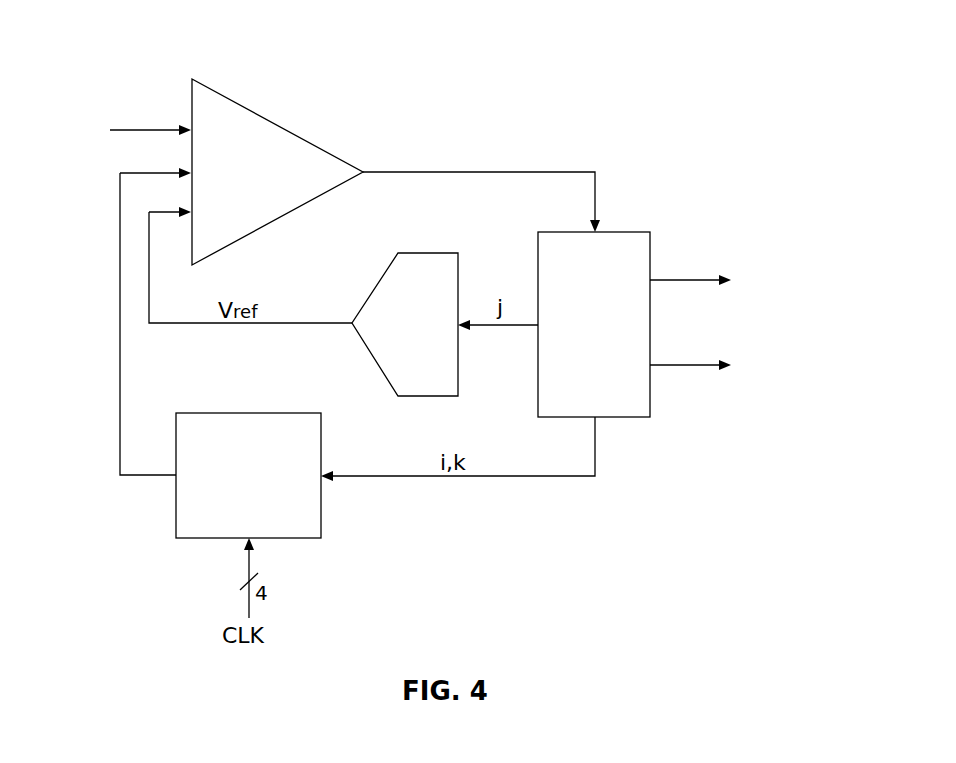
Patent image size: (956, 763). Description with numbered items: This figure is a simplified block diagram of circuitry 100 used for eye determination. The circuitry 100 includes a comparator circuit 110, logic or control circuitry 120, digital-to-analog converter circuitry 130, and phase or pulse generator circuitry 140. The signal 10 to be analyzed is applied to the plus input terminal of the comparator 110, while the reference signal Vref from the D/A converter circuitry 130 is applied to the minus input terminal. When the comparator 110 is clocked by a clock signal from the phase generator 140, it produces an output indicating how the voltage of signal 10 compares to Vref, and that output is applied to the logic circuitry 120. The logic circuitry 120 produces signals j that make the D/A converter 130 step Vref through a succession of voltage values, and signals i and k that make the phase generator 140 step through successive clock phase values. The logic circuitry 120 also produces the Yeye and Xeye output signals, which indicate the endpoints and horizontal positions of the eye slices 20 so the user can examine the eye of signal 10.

The circuitry 100 is at (120, 45).
The signal 10 is at (146, 128).
The comparator circuit 110 is at (277, 122).
The logic circuitry 120 is at (622, 232).
The D/A converter circuitry 130 is at (427, 253).
The phase generator circuitry 140 is at (258, 413).
The eye slices 20 is at (803, 270).